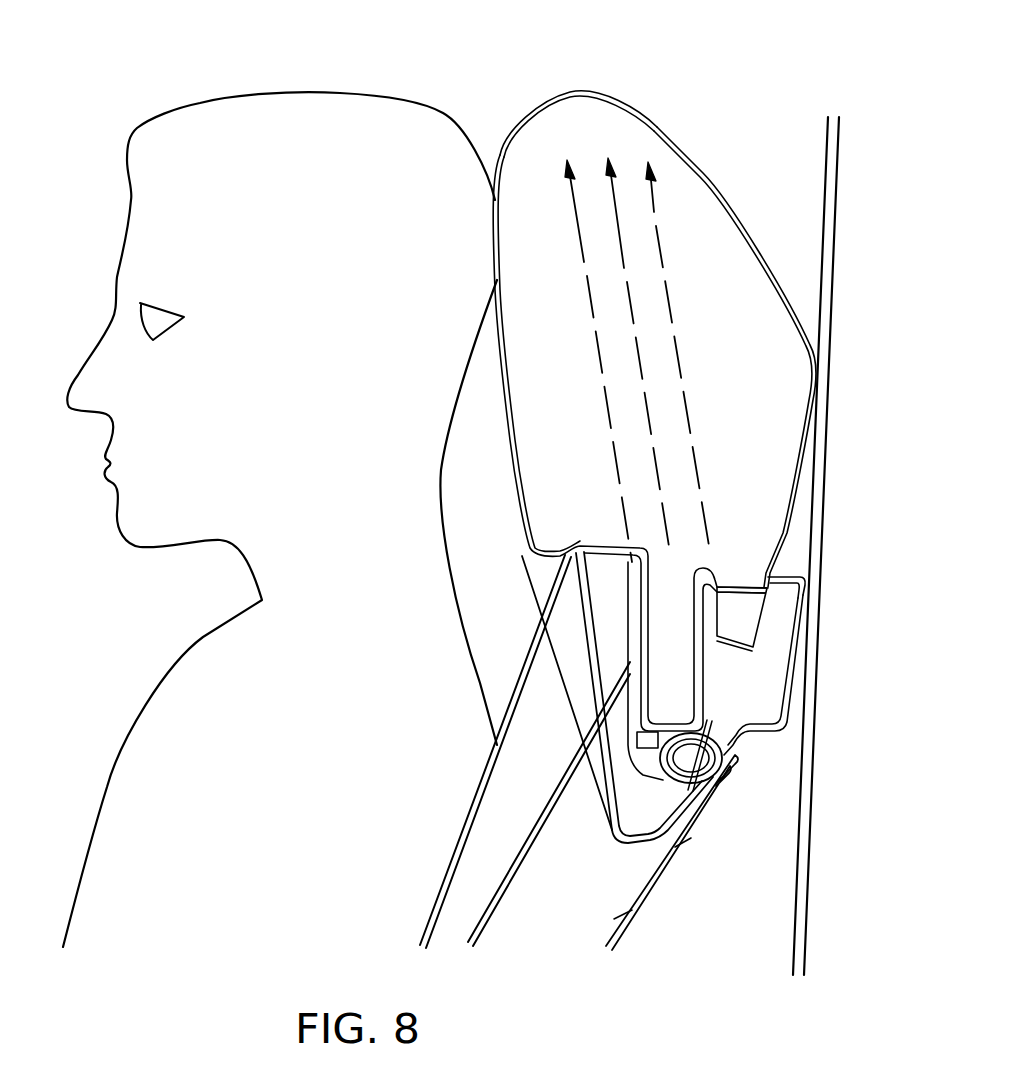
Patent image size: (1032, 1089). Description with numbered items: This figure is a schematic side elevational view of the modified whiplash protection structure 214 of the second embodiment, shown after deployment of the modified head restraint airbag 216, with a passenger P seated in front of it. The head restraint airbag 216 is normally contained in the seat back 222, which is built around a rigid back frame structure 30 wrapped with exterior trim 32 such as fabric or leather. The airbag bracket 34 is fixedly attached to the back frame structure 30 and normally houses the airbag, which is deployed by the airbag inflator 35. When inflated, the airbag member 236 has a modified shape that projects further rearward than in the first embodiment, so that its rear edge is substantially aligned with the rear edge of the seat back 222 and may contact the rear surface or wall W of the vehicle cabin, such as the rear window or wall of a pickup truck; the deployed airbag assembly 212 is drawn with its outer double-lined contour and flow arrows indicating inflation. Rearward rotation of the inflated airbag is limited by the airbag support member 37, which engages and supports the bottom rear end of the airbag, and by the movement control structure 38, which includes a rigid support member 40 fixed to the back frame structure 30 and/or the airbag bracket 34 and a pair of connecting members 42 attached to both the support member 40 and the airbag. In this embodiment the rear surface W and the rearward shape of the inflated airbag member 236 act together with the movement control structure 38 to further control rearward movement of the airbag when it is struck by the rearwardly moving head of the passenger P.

The passenger P is at (230, 68).
The rear surface or wall W is at (838, 222).
The airbag cushion 212 is at (700, 72).
The airbag member 236 is at (535, 97).
The whiplash protection structure 214 is at (758, 213).
The seat back 222 is at (790, 576).
The head restraint airbag 216 is at (747, 680).
The airbag support member 37 is at (765, 620).
The airbag bracket 34 is at (716, 782).
The airbag inflator 35 is at (647, 752).
The support member 40 is at (692, 812).
The movement control structure 38 is at (603, 837).
The connecting members 42 is at (597, 790).
The exterior trim 32 is at (463, 847).
The back frame structure 30 is at (480, 902).